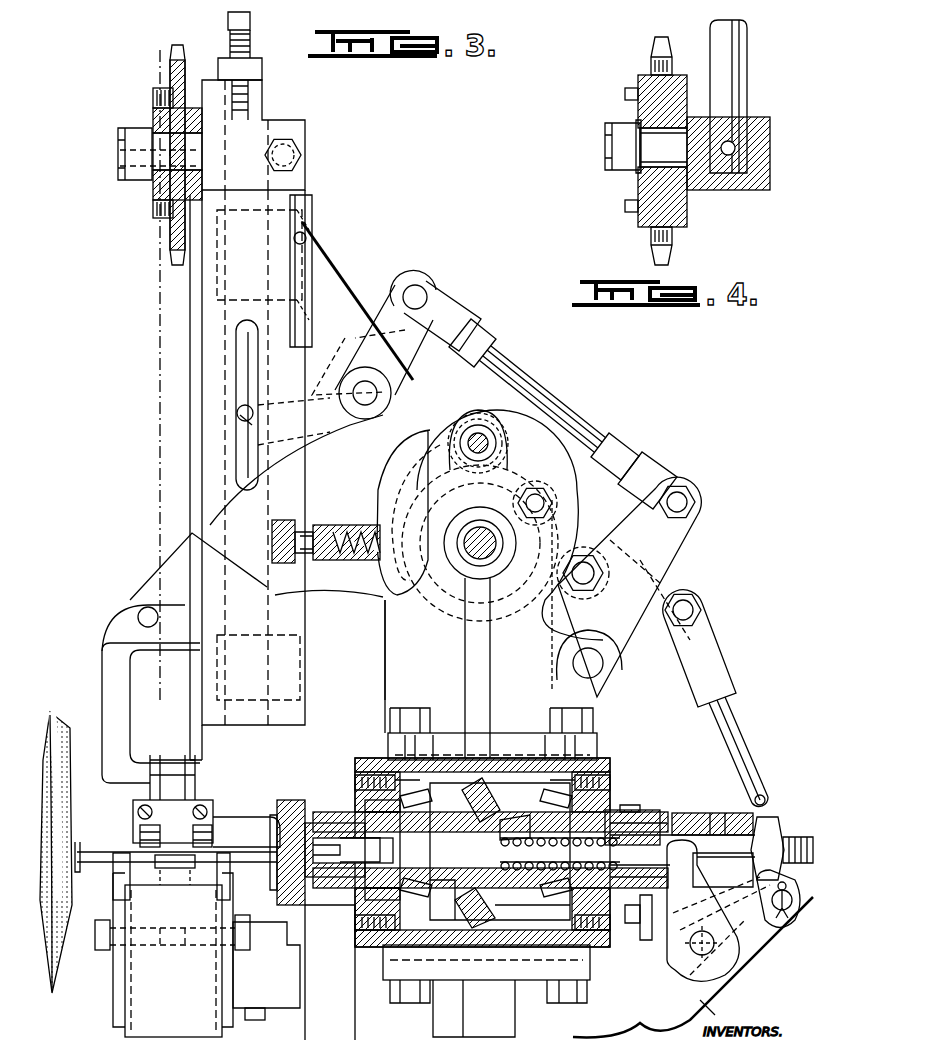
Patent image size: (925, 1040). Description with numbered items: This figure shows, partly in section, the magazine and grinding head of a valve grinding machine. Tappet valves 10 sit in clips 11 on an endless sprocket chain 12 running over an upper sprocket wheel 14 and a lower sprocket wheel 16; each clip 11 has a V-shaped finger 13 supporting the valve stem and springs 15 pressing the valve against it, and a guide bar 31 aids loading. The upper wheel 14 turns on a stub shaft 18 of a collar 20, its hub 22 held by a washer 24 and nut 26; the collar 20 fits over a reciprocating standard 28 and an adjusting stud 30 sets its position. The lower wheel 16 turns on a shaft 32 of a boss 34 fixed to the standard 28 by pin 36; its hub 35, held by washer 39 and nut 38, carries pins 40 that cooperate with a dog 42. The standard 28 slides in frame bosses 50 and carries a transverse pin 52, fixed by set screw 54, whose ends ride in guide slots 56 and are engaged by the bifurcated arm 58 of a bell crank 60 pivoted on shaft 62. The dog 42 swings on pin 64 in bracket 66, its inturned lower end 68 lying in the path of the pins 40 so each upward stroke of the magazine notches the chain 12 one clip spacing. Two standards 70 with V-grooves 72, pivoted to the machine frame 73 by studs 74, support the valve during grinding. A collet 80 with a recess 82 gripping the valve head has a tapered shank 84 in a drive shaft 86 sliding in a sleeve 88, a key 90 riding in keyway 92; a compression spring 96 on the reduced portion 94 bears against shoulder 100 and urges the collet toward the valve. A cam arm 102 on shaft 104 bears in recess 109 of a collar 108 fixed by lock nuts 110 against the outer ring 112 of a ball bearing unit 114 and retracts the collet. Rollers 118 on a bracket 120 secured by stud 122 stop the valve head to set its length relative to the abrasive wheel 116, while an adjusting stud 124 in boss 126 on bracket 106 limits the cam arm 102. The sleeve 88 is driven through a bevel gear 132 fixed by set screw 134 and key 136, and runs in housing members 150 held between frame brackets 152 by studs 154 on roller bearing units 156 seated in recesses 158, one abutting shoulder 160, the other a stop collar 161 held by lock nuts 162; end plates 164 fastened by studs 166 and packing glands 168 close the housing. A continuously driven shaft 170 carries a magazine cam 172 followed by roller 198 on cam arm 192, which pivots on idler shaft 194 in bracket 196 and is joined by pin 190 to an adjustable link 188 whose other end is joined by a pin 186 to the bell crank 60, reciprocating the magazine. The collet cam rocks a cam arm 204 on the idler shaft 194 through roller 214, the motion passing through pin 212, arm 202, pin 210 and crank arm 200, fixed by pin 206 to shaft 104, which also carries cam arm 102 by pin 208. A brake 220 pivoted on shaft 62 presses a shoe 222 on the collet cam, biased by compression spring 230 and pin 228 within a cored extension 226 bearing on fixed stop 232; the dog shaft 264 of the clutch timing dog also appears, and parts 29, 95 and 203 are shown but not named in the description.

In FIG. 3, the tappet valve 10 is at (250, 832).
In FIG. 3, the clip 11 is at (200, 800).
In FIG. 3, the endless sprocket chain 12 is at (160, 488).
In FIG. 3, the V-shaped finger 13 is at (175, 870).
In FIG. 3, the upper sprocket wheel 14 is at (172, 235).
In FIG. 3, the springs 15 is at (212, 825).
In FIG. 4, the lower sprocket wheel 16 is at (645, 105).
In FIG. 3, the stub shaft 18 is at (118, 156).
In FIG. 3, the collar 20 is at (262, 128).
In FIG. 3, the hub 22 is at (195, 105).
In FIG. 3, the washer 24 is at (153, 125).
In FIG. 3, the nut 26 is at (125, 132).
In FIG. 3, the standard 28 is at (312, 200).
In FIG. 4, the standard 28 is at (747, 90).
In FIG. 3, the nut 29 is at (301, 155).
In FIG. 3, the adjusting stud 30 is at (252, 36).
In FIG. 3, the guide bar 31 is at (312, 268).
In FIG. 4, the shaft 32 is at (663, 147).
In FIG. 4, the boss 34 is at (725, 190).
In FIG. 4, the hub 35 is at (670, 62).
In FIG. 4, the pin 36 is at (735, 150).
In FIG. 4, the nut 38 is at (620, 170).
In FIG. 4, the washer 39 is at (638, 180).
In FIG. 4, the pins 40 is at (625, 92).
In FIG. 3, the dog 42 is at (102, 670).
In FIG. 3, the bosses 50 is at (205, 275).
In FIG. 3, the transverse pin 52 is at (240, 420).
In FIG. 3, the set screw 54 is at (237, 413).
In FIG. 3, the guide slots 56 is at (236, 350).
In FIG. 3, the bifurcated arm 58 is at (345, 378).
In FIG. 3, the bell crank 60 is at (385, 308).
In FIG. 3, the shaft 62 is at (370, 393).
In FIG. 3, the pin 64 is at (138, 615).
In FIG. 3, the bracket 66 is at (148, 600).
In FIG. 3, the lower end 68 is at (130, 782).
In FIG. 3, the standards 70 is at (113, 897).
In FIG. 3, the V-groove 72 is at (118, 862).
In FIG. 3, the machine frame 73 is at (173, 961).
In FIG. 3, the studs 74 is at (97, 935).
In FIG. 3, the collet 80 is at (348, 823).
In FIG. 3, the recess 82 is at (290, 810).
In FIG. 3, the tapered shank 84 is at (322, 823).
In FIG. 3, the drive shaft 86 is at (383, 760).
In FIG. 3, the sleeve 88 is at (540, 815).
In FIG. 3, the key 90 is at (365, 880).
In FIG. 3, the keyway 92 is at (490, 850).
In FIG. 3, the reduced portion 94 is at (560, 853).
In FIG. 3, the shaft 95 is at (403, 849).
In FIG. 3, the compression spring 96 is at (500, 904).
In FIG. 3, the shoulder 100 is at (220, 815).
In FIG. 3, the cam arm 102 is at (690, 955).
In FIG. 3, the shaft 104 is at (748, 962).
In FIG. 3, the bracket 106 is at (708, 998).
In FIG. 3, the collar 108 is at (690, 813).
In FIG. 3, the recess 109 is at (725, 870).
In FIG. 3, the lock nuts 110 is at (778, 822).
In FIG. 3, the outer ring 112 is at (745, 795).
In FIG. 3, the ball bearing unit 114 is at (715, 813).
In FIG. 3, the abrasive wheel 116 is at (75, 707).
In FIG. 3, the rollers 118 is at (222, 902).
In FIG. 3, the bracket 120 is at (245, 925).
In FIG. 3, the stud 122 is at (265, 1016).
In FIG. 3, the adjusting stud 124 is at (640, 940).
In FIG. 3, the boss 126 is at (630, 923).
In FIG. 3, the bevel gear 132 is at (464, 788).
In FIG. 3, the set screw 134 is at (445, 785).
In FIG. 3, the key 136 is at (500, 812).
In FIG. 3, the housing members 150 is at (427, 700).
In FIG. 3, the frame brackets 152 is at (500, 735).
In FIG. 3, the studs 154 is at (400, 1002).
In FIG. 3, the roller bearing units 156 is at (410, 730).
In FIG. 3, the recesses 158 is at (435, 760).
In FIG. 3, the shoulder 160 is at (358, 900).
In FIG. 3, the stop collar 161 is at (635, 805).
In FIG. 3, the lock nuts 162 is at (640, 812).
In FIG. 3, the end plates 164 is at (378, 778).
In FIG. 3, the studs 166 is at (360, 775).
In FIG. 3, the packing glands 168 is at (360, 925).
In FIG. 3, the shaft 170 is at (480, 552).
In FIG. 3, the magazine cam 172 is at (540, 408).
In FIG. 3, the pin 186 is at (418, 297).
In FIG. 3, the link 188 is at (598, 428).
In FIG. 3, the pin 190 is at (680, 500).
In FIG. 3, the cam arm 192 is at (672, 545).
In FIG. 3, the idler shaft 194 is at (588, 648).
In FIG. 3, the bracket 196 is at (605, 652).
In FIG. 3, the roller 198 is at (600, 558).
In FIG. 3, the crank arm 200 is at (785, 935).
In FIG. 3, the arm 202 is at (735, 690).
In FIG. 3, the pivot 203 is at (730, 655).
In FIG. 3, the cam arm 204 is at (672, 593).
In FIG. 3, the pin 206 is at (695, 920).
In FIG. 3, the pin 208 is at (735, 912).
In FIG. 3, the pin 210 is at (790, 915).
In FIG. 3, the pin 212 is at (695, 610).
In FIG. 3, the roller 214 is at (556, 494).
In FIG. 3, the brake 220 is at (395, 488).
In FIG. 3, the shoe 222 is at (395, 458).
In FIG. 3, the cored-out extension 226 is at (375, 530).
In FIG. 3, the pin 228 is at (305, 558).
In FIG. 3, the compression spring 230 is at (468, 525).
In FIG. 3, the fixed stop 232 is at (280, 565).
In FIG. 3, the dog shaft 264 is at (478, 425).